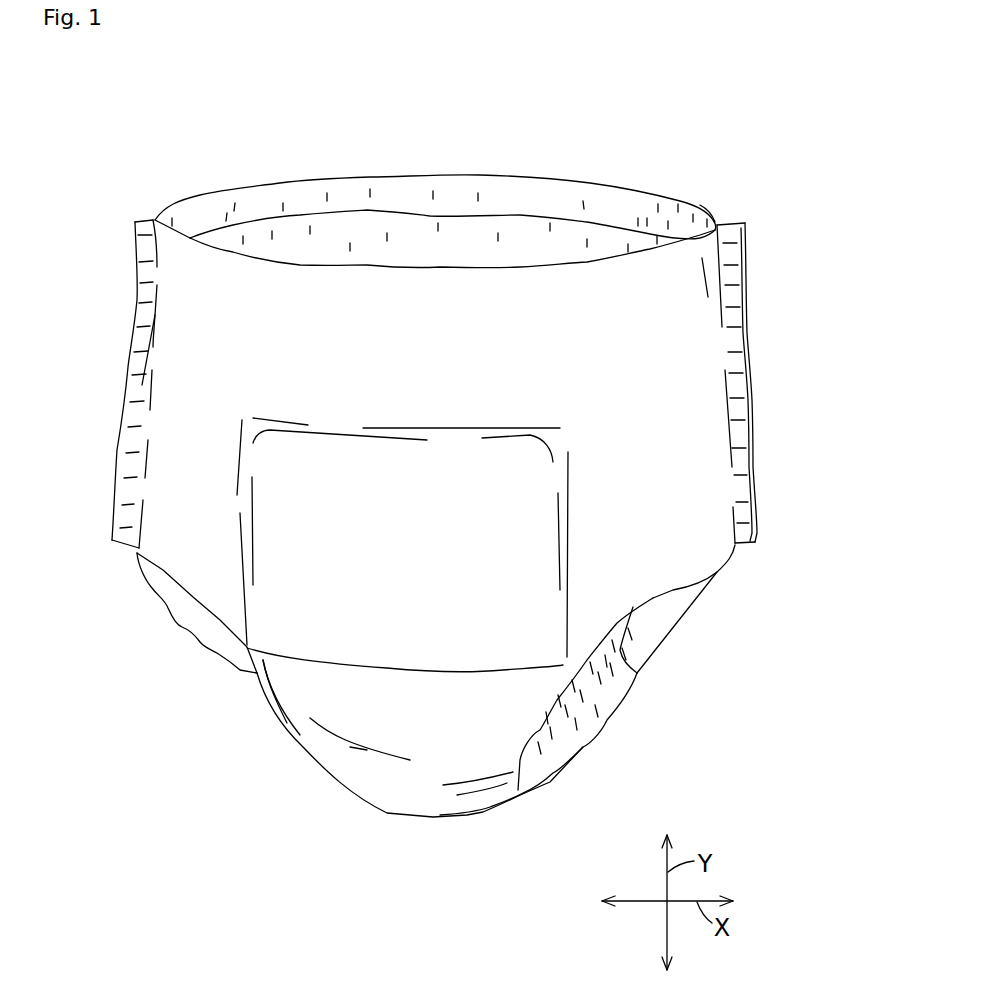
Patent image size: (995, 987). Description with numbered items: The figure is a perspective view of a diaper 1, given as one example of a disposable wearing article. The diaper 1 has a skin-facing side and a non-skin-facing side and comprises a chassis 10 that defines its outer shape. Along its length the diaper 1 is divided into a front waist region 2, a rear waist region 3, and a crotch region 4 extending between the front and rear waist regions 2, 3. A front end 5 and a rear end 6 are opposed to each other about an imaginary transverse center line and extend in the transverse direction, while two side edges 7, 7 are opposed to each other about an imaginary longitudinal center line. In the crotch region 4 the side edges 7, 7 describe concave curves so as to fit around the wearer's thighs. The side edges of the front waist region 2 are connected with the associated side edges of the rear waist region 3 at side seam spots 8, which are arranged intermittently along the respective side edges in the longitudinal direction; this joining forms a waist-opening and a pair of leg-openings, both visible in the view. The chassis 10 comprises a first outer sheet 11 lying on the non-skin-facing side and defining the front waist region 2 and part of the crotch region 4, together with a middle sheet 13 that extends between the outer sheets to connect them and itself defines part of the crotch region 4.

The diaper 1 is at (661, 122).
The front waist region 2 is at (192, 420).
The rear waist region 3 is at (460, 230).
The crotch region 4 is at (398, 785).
The front end 5 is at (420, 258).
The rear end 6 is at (400, 177).
The side edge 7 is at (181, 628).
The side seam spot 8 is at (141, 261).
The chassis 10 is at (710, 205).
The first outer sheet 11 is at (177, 340).
The middle sheet 13 is at (325, 735).